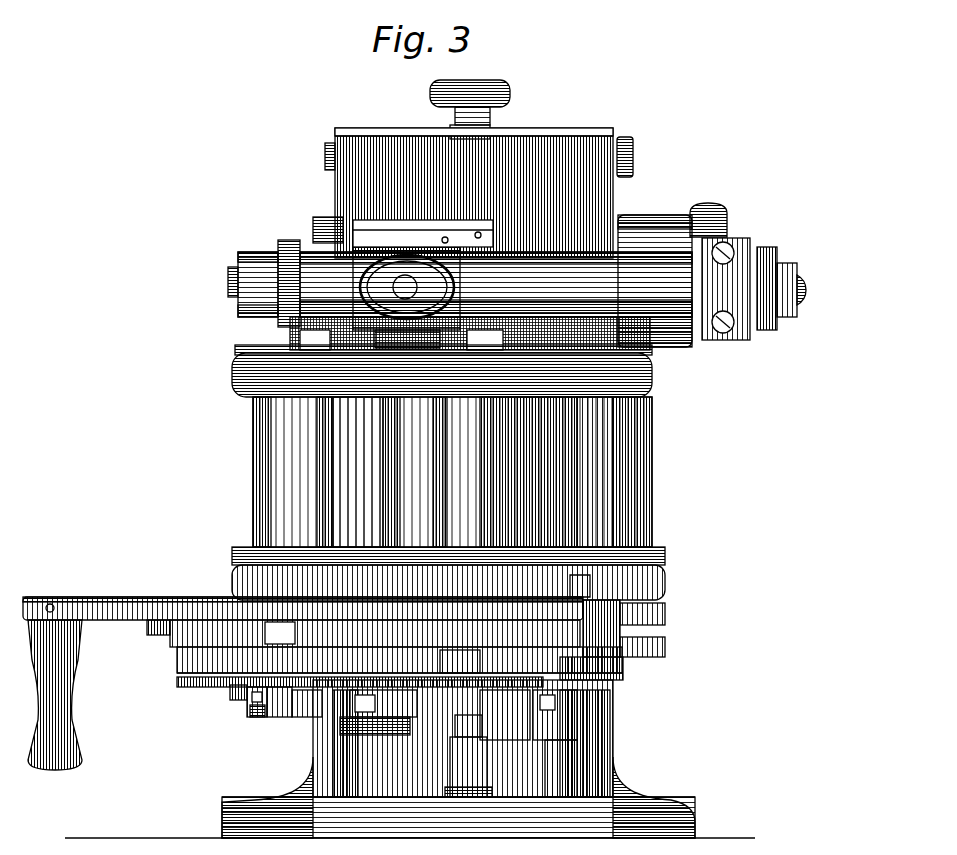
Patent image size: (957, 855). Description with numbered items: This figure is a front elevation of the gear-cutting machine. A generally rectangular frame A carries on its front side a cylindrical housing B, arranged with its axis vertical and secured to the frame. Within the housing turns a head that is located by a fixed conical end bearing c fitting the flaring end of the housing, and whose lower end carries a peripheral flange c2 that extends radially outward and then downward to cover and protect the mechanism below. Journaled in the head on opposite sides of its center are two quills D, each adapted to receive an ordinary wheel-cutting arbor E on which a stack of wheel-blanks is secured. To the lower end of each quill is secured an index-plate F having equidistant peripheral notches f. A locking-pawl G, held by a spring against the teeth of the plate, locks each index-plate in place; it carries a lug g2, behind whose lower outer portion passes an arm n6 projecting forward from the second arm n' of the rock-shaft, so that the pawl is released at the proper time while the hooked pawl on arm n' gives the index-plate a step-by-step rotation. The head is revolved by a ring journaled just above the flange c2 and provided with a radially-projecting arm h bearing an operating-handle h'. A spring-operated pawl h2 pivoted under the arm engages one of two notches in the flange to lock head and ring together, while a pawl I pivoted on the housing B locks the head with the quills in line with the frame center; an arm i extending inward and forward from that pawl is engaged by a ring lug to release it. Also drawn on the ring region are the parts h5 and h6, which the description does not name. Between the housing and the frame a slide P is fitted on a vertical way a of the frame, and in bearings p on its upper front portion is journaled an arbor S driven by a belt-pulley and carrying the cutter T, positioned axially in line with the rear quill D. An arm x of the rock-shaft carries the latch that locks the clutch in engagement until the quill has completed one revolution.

The slide P is at (479, 169).
The cutter T is at (412, 222).
The arbor S is at (610, 228).
The bearings p is at (310, 250).
The cylindrical housing B is at (447, 476).
The quills D is at (358, 472).
The frame A is at (410, 669).
The radially-projecting arm h is at (303, 597).
The operating-handle h' is at (60, 695).
The spring-operated pawl h2 is at (157, 636).
The stop lug h5 is at (588, 600).
The pin h6 is at (290, 632).
The arm i is at (667, 613).
The pawl I is at (667, 647).
The fixed conical end bearing c is at (460, 649).
The peripheral flange c2 is at (215, 672).
The wheel-cutting arbor E is at (396, 653).
The index-plate F is at (505, 715).
The arm x is at (383, 705).
The vertical way a is at (375, 735).
The peripheral notches f is at (441, 756).
The locking-pawl G is at (230, 700).
The lug g2 is at (555, 715).
The arm n6 is at (258, 718).
The second arm n' is at (303, 720).